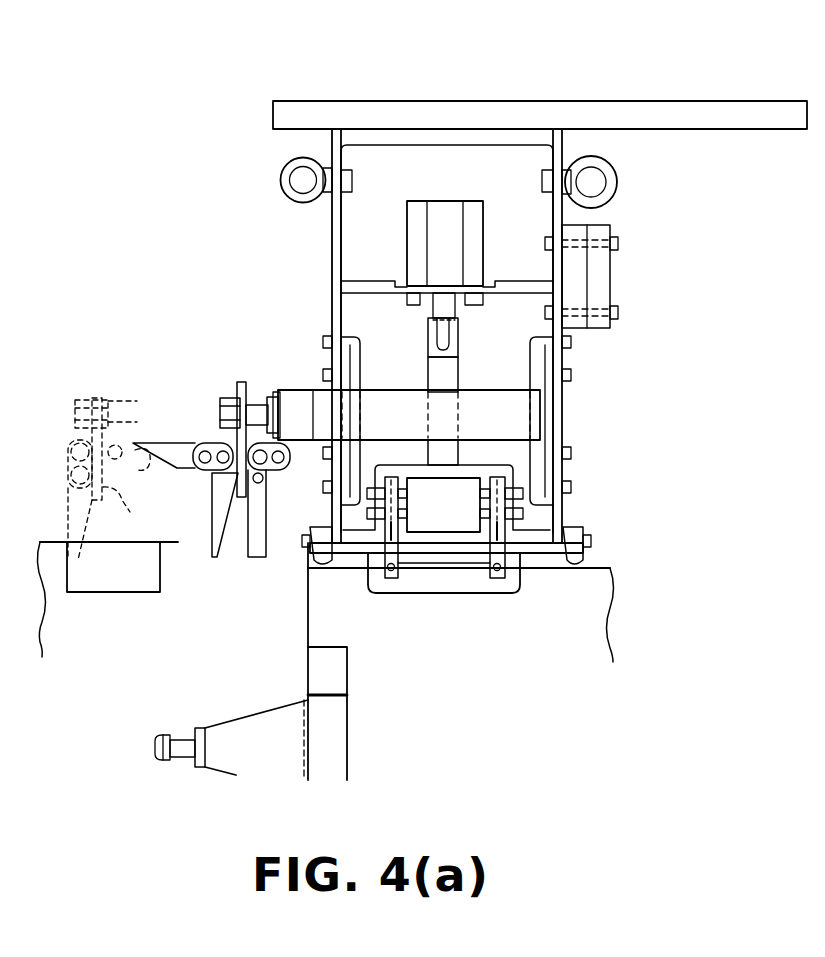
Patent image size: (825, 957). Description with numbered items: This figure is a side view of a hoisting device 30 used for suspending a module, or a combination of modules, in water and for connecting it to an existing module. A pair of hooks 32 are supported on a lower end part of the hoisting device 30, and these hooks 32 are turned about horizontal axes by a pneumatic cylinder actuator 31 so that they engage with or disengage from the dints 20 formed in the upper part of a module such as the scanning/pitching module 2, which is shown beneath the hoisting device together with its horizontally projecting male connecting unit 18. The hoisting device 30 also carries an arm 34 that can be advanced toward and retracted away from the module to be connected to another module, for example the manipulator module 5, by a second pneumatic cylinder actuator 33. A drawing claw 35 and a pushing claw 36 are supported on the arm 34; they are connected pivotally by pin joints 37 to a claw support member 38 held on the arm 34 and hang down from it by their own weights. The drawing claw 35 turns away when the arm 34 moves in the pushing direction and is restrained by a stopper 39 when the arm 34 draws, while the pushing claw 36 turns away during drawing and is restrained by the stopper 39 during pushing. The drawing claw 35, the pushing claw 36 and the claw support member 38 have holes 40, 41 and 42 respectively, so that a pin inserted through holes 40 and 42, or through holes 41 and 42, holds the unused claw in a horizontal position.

The scanning/pitching module 2 is at (618, 633).
The manipulator module 5 is at (62, 625).
The male connecting unit 18 is at (233, 724).
The dints 20 is at (455, 595).
The hoisting device 30 is at (453, 101).
The pneumatic cylinder actuator 31 is at (407, 250).
The hooks 32 is at (502, 558).
The pneumatic cylinder actuator 33 is at (515, 413).
The arm 34 is at (121, 400).
The drawing claw 35 is at (250, 513).
The pushing claw 36 is at (183, 418).
The pin joints 37 is at (244, 433).
The claw support member 38 is at (260, 427).
The stopper 39 is at (107, 488).
The hole 40 is at (284, 500).
The hole 41 is at (204, 442).
The hole 42 is at (280, 465).